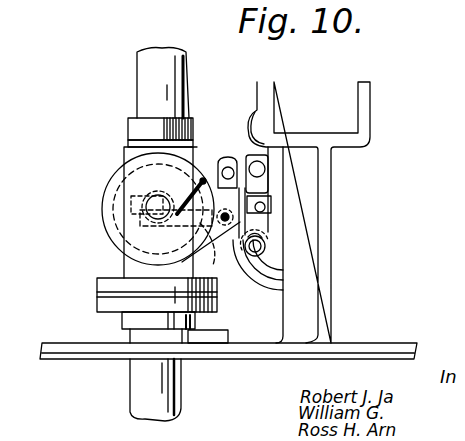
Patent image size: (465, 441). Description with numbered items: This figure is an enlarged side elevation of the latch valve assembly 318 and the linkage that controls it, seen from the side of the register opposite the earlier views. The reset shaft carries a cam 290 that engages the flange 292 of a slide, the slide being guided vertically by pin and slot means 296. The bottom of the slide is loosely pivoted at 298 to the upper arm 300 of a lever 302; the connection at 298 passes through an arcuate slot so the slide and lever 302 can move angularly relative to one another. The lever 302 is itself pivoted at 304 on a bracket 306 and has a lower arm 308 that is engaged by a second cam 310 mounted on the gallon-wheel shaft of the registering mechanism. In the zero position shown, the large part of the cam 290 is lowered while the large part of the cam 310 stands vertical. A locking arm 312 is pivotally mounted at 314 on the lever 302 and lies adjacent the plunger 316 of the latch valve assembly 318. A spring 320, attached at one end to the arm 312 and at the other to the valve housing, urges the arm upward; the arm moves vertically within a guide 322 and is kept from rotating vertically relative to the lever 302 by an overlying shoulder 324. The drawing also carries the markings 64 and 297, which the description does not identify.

The shaft 64 is at (184, 388).
The cam 290 is at (269, 174).
The flange 292 is at (281, 132).
The pin and slot means 296 is at (212, 150).
The hook foot 297 is at (249, 147).
The pivot 298 is at (268, 199).
The upper arm 300 is at (271, 216).
The lever 302 is at (283, 283).
The pivot 304 is at (284, 300).
The bracket 306 is at (129, 142).
The lower arm 308 is at (266, 259).
The cam 310 is at (267, 242).
The locking arm 312 is at (124, 249).
The pivot 314 is at (203, 250).
The plunger 316 is at (125, 173).
The latch valve assembly 318 is at (108, 214).
The spring 320 is at (188, 203).
The guide 322 is at (118, 198).
The overlying shoulder 324 is at (160, 212).